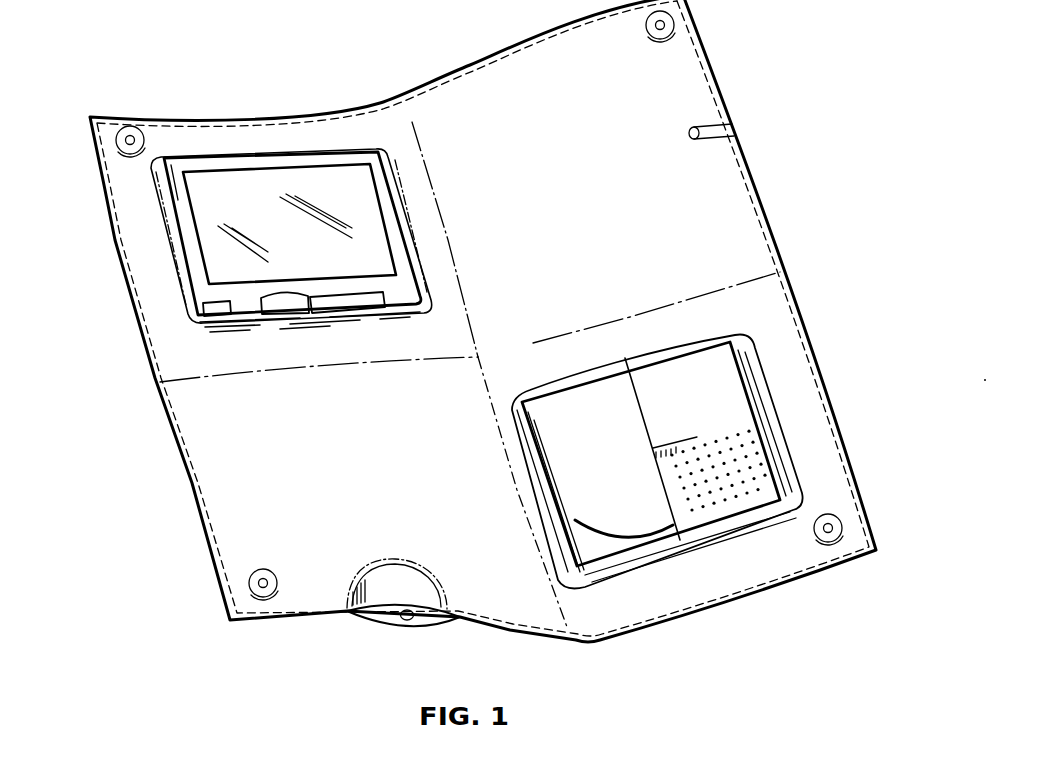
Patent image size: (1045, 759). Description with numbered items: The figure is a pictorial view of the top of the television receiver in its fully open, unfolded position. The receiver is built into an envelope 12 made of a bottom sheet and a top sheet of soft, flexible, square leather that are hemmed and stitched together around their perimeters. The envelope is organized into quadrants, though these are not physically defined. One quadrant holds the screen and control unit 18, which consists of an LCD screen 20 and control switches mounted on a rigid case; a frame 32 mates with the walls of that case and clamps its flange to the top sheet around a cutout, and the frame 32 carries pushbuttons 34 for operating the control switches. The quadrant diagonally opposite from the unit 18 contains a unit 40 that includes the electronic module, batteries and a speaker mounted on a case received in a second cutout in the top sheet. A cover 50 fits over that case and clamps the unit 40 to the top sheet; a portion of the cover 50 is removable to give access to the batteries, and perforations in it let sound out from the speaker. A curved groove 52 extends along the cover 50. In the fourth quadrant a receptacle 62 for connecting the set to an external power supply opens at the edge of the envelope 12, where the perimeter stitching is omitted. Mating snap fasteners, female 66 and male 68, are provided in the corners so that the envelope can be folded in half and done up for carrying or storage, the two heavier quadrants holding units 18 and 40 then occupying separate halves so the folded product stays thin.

The envelope 12 is at (443, 74).
The screen and control unit 18 is at (165, 266).
The LCD screen 20 is at (302, 246).
The frame 32 is at (402, 227).
The pushbuttons 34 is at (328, 309).
The unit 40 is at (766, 373).
The cover 50 is at (740, 523).
The curved groove 52 is at (650, 538).
The receptacle 62 is at (386, 614).
The female snap fastener 66 is at (129, 137).
The male snap fastener 68 is at (662, 25).